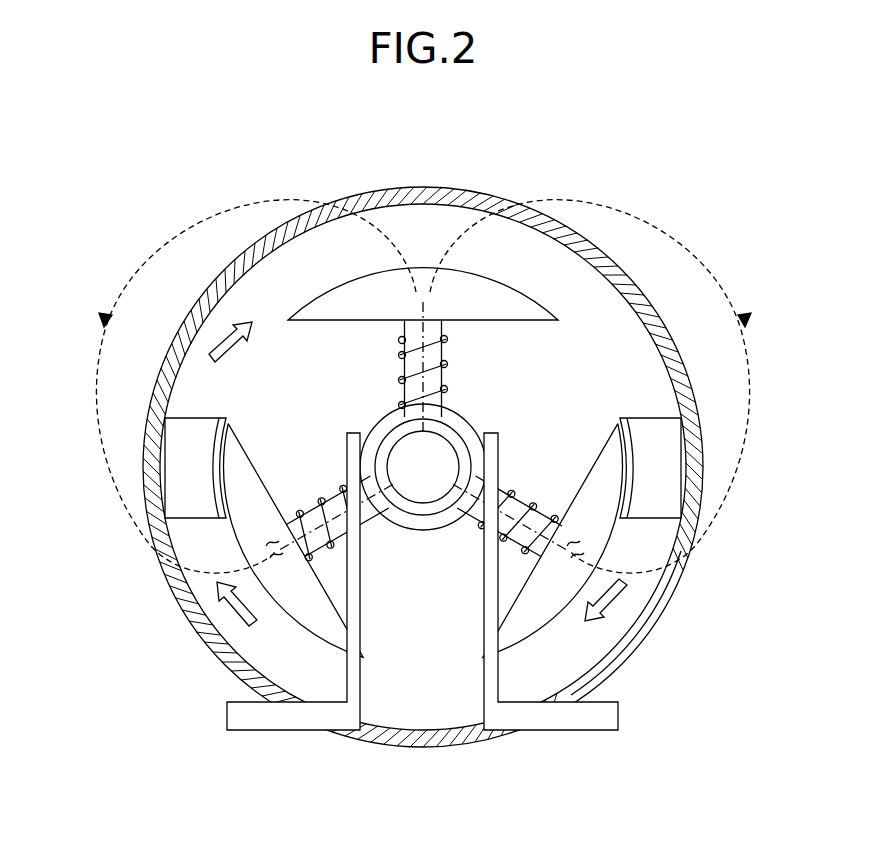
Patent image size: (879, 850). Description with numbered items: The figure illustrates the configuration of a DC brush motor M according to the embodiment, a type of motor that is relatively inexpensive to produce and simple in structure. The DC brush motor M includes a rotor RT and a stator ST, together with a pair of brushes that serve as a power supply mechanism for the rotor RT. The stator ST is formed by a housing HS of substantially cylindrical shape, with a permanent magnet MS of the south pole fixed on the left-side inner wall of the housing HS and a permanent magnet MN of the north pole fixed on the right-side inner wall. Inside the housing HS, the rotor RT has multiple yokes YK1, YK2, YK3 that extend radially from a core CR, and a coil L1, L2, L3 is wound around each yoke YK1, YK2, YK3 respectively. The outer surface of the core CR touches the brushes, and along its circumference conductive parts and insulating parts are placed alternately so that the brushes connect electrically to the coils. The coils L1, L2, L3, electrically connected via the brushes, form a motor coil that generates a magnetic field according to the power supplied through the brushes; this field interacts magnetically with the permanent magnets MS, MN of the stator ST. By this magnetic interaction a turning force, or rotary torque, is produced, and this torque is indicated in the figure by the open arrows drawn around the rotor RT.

The DC brush motor M is at (602, 160).
The housing HS is at (425, 190).
The rotor RT is at (570, 277).
The stator ST is at (638, 356).
The yoke YK3 is at (485, 283).
The yoke YK2 is at (299, 612).
The yoke YK1 is at (553, 612).
The coil L3 is at (467, 355).
The coil L2 is at (328, 486).
The coil L1 is at (521, 486).
The permanent magnet of the south pole MS is at (212, 418).
The permanent magnet of the north pole MN is at (644, 418).
The core CR is at (427, 528).